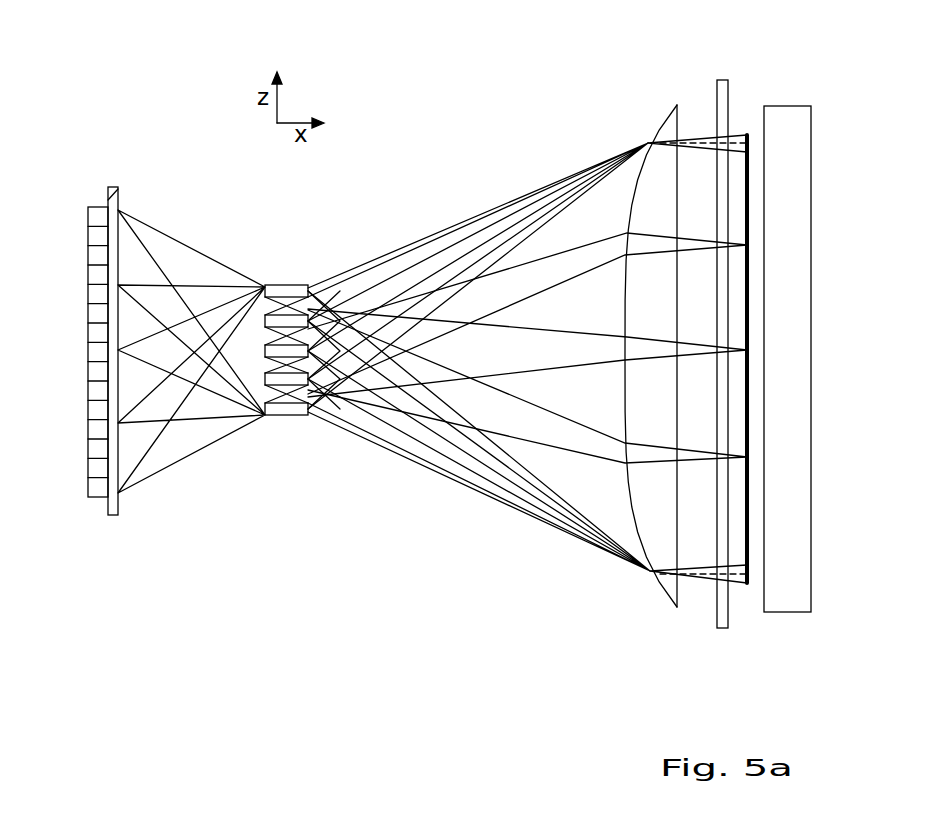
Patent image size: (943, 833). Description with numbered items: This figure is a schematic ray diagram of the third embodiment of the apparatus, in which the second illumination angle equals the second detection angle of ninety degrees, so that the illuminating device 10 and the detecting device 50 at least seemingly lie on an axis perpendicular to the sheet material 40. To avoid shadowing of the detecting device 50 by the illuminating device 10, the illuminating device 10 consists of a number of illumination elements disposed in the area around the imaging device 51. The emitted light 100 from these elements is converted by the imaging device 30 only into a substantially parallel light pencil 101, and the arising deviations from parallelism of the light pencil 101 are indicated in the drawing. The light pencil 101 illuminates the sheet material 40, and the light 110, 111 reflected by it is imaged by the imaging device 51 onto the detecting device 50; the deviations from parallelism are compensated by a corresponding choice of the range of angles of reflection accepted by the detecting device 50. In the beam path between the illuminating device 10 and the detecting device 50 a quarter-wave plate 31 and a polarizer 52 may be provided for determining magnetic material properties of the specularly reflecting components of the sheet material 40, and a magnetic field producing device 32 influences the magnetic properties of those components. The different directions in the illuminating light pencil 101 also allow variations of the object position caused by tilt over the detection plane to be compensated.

The illuminating device 10 is at (293, 285).
The imaging device 30 is at (668, 128).
The quarter-wave plate 31 is at (720, 628).
The magnetic field producing device 32 is at (792, 137).
The sheet material 40 is at (748, 138).
The detecting device 50 is at (103, 497).
The imaging device 51 is at (327, 420).
The polarizer 52 is at (114, 190).
The emitted light 100 is at (412, 247).
The light pencil 101 is at (712, 133).
The reflected light 110 is at (550, 450).
The reflected light 111 is at (652, 578).